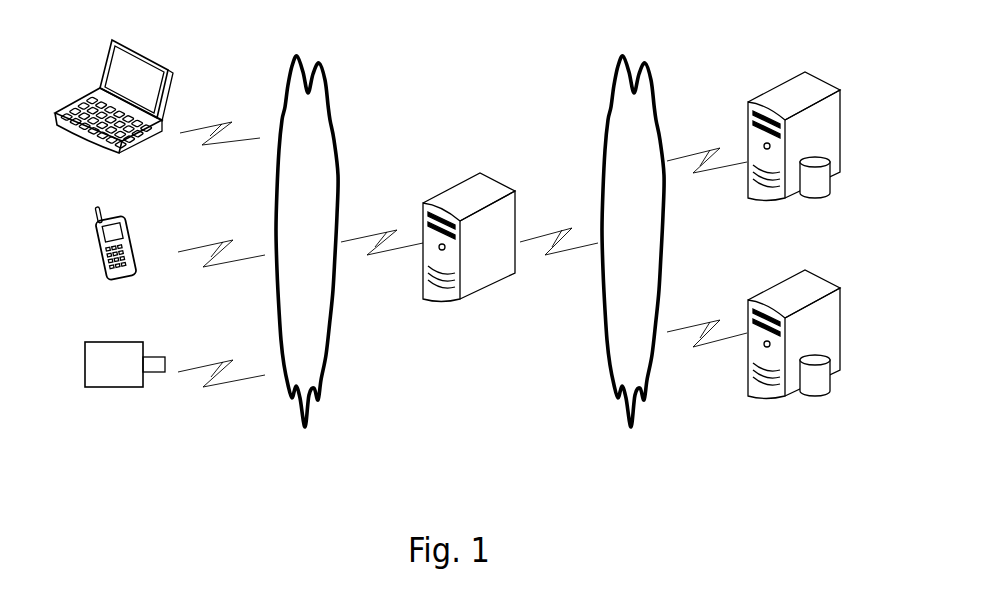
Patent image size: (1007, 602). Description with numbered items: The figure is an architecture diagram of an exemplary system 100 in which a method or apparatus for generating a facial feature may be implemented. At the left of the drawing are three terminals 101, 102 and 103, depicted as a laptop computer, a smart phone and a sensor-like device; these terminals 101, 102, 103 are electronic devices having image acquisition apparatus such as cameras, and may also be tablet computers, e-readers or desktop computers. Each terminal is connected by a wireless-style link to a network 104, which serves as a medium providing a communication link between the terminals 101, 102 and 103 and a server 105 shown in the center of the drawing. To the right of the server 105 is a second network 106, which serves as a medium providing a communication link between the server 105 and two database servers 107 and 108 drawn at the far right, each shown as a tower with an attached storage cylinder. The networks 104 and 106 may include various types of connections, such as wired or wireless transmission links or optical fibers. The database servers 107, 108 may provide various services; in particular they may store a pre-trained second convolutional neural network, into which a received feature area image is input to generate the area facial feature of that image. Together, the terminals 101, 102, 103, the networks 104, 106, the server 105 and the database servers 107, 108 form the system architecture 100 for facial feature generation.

The system architecture 100 is at (738, 40).
The terminal 101 is at (114, 111).
The terminal 102 is at (114, 254).
The terminal 103 is at (125, 381).
The network 104 is at (307, 241).
The server 105 is at (469, 253).
The network 106 is at (633, 241).
The database server 107 is at (794, 152).
The database server 108 is at (794, 350).